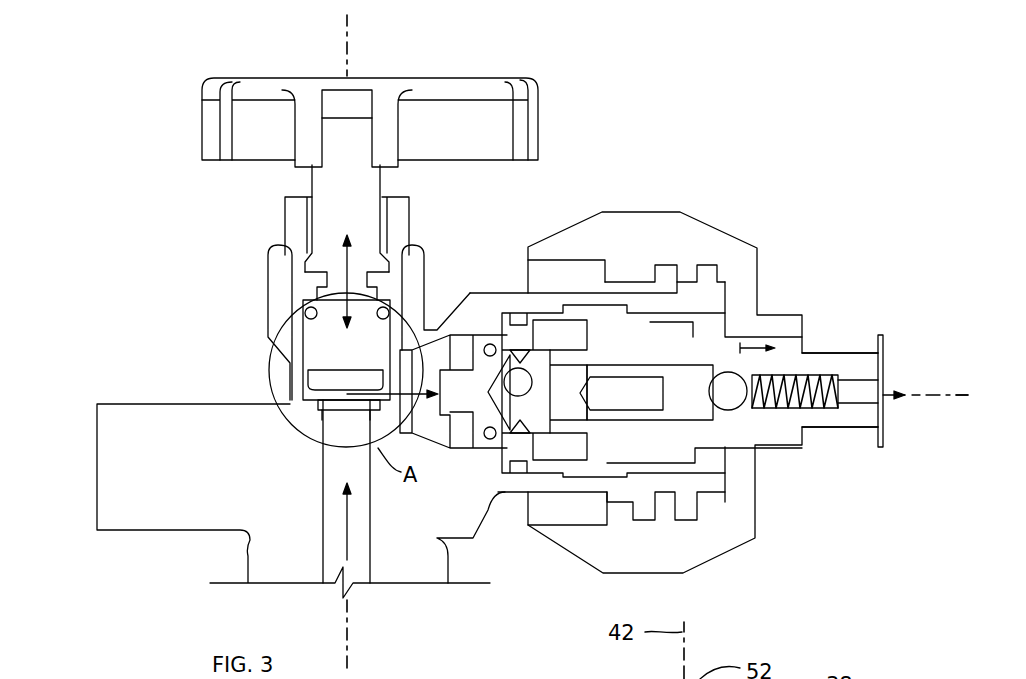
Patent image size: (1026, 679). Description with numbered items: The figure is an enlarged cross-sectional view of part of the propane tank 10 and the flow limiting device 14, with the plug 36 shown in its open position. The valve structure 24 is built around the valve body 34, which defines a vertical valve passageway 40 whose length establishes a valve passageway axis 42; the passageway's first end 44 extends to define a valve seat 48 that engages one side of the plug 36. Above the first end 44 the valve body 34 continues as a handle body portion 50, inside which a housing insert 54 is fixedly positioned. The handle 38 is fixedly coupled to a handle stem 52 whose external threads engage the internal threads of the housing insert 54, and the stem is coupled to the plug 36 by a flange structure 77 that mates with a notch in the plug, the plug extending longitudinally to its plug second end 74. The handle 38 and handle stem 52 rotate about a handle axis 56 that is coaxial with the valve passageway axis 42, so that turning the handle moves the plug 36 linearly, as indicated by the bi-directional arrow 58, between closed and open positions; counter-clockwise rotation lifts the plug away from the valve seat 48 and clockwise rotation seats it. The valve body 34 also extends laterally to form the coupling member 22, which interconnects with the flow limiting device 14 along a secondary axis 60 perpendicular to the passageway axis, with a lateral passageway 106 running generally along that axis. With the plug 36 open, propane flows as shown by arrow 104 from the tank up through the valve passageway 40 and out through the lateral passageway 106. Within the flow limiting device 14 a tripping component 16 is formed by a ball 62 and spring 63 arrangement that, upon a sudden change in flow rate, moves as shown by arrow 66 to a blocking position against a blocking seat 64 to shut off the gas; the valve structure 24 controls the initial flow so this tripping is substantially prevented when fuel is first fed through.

The propane tank 10 is at (156, 552).
The flow limiting device 14 is at (678, 200).
The tripping component 16 is at (778, 360).
The coupling member 22 is at (705, 266).
The valve structure 24 is at (241, 404).
The valve body 34 is at (154, 406).
The plug 36 is at (448, 328).
The handle 38 is at (472, 78).
The valve passageway 40 is at (371, 502).
The valve passageway axis 42 is at (349, 34).
The first end 44 is at (316, 404).
The valve seat 48 is at (308, 410).
The handle body portion 50 is at (278, 268).
The handle stem 52 is at (367, 182).
The housing insert 54 is at (297, 205).
The handle axis 56 is at (349, 648).
The bi-directional arrow 58 is at (352, 266).
The secondary axis 60 is at (958, 390).
The ball 62 is at (736, 398).
The spring 63 is at (801, 380).
The blocking seat 64 is at (767, 402).
The arrow 66 is at (760, 337).
The plug second end 74 is at (320, 265).
The flange structure 77 is at (315, 288).
The arrow 104 is at (345, 517).
The lateral passageway 106 is at (853, 382).